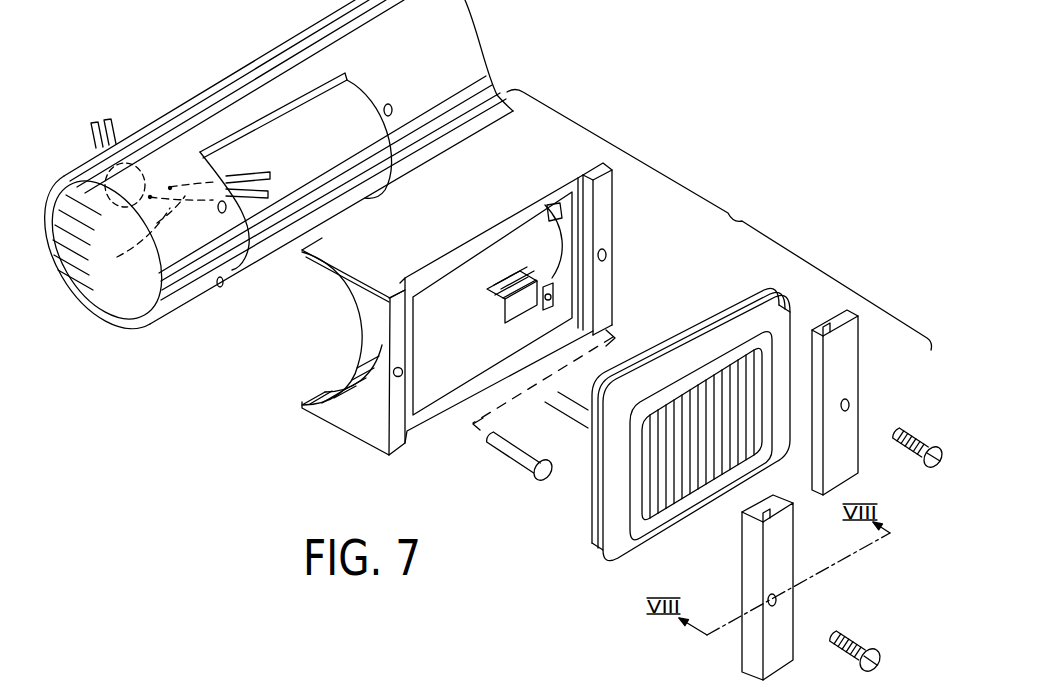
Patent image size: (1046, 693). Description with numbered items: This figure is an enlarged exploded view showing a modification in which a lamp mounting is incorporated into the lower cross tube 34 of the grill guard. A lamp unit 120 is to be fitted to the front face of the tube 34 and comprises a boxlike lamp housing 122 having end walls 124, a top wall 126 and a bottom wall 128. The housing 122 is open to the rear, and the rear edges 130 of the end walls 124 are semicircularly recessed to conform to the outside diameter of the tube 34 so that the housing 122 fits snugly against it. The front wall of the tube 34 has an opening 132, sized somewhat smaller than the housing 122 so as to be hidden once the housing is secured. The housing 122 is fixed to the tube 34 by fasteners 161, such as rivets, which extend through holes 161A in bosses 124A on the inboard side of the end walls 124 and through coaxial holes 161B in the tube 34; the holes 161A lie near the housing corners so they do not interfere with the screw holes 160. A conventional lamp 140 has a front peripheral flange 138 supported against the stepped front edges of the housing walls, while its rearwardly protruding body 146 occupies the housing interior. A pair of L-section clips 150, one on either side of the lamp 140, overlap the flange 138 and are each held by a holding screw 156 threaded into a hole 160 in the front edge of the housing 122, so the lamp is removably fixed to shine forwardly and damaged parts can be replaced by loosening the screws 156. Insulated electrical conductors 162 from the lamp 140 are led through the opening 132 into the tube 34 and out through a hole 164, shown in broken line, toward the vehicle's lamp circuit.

The lower tube 34 is at (203, 95).
The opening 132 is at (290, 112).
The insulated electrical conductors 162 is at (94, 148).
The hole 164 is at (88, 172).
The coaxial holes 161B is at (224, 285).
The lamp unit 120 is at (376, 465).
The lamp housing 122 is at (620, 240).
The end walls 124 is at (360, 420).
The bosses 124A is at (553, 222).
The top wall 126 is at (392, 247).
The bottom wall 128 is at (510, 309).
The rear edges 130 is at (308, 398).
The hole 160 is at (401, 376).
The fasteners 161 is at (523, 457).
The holes 161A is at (546, 308).
The lamp 140 is at (726, 294).
The front peripheral flange 138 is at (700, 347).
The rearwardly protruding body 146 is at (662, 353).
The clips 150 is at (850, 363).
The holding screw 156 is at (906, 436).